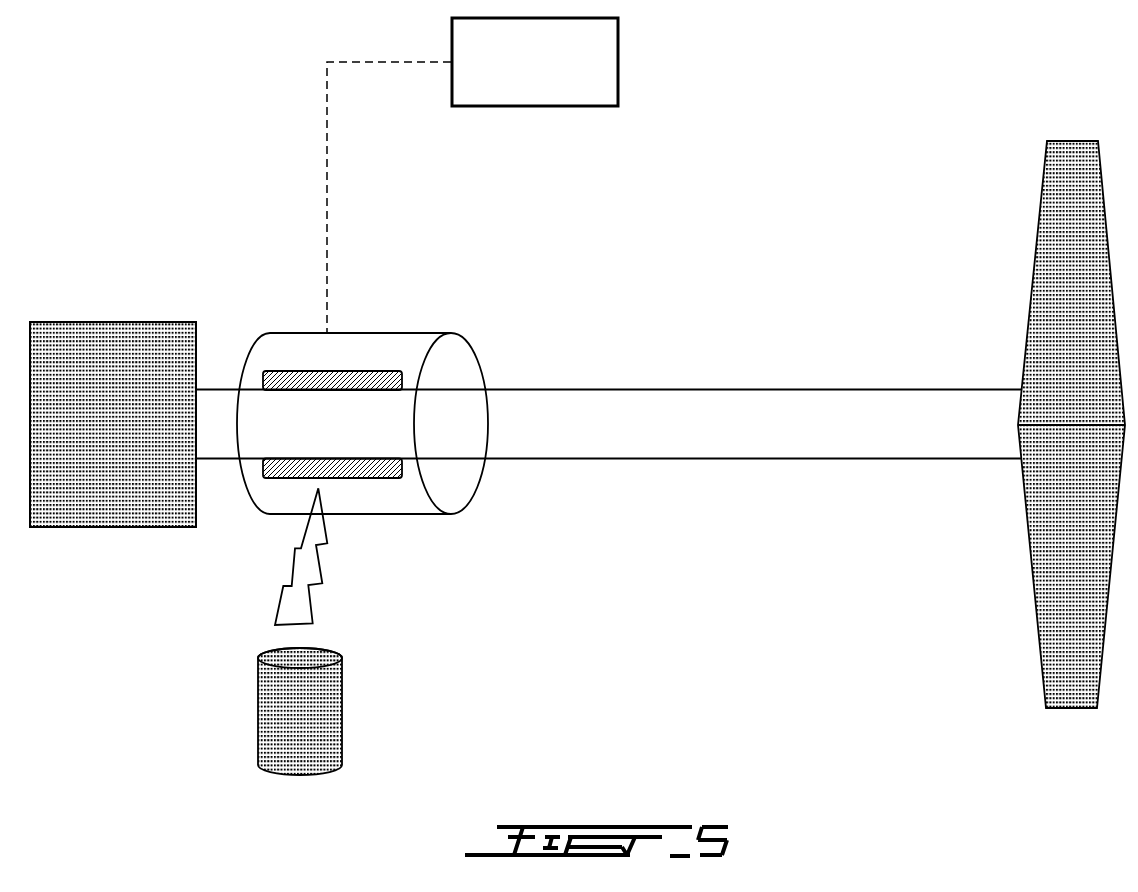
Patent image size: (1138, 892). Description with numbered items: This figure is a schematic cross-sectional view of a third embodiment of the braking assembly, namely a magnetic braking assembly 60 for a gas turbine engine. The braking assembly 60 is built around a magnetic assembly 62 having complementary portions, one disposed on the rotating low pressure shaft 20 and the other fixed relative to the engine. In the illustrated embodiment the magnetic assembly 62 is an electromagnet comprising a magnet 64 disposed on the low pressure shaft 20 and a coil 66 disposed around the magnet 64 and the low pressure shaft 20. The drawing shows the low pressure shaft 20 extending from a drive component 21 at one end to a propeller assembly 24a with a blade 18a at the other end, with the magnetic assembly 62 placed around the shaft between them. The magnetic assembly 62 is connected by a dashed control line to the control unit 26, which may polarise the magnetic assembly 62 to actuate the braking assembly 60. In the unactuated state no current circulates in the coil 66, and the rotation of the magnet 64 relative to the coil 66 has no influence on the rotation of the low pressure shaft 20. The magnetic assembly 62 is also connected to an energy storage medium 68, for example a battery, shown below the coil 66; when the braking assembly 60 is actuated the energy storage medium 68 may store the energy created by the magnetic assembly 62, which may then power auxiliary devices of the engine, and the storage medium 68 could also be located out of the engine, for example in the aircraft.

The propeller blade 18a is at (1070, 592).
The low pressure shaft 20 is at (568, 460).
The motor 21 is at (90, 320).
The propeller assembly 24a is at (748, 210).
The control unit 26 is at (618, 43).
The magnetic braking assembly 60 is at (690, 128).
The magnetic assembly 62 is at (520, 230).
The magnet 64 is at (375, 371).
The coil 66 is at (362, 332).
The energy storage medium 68 is at (342, 708).